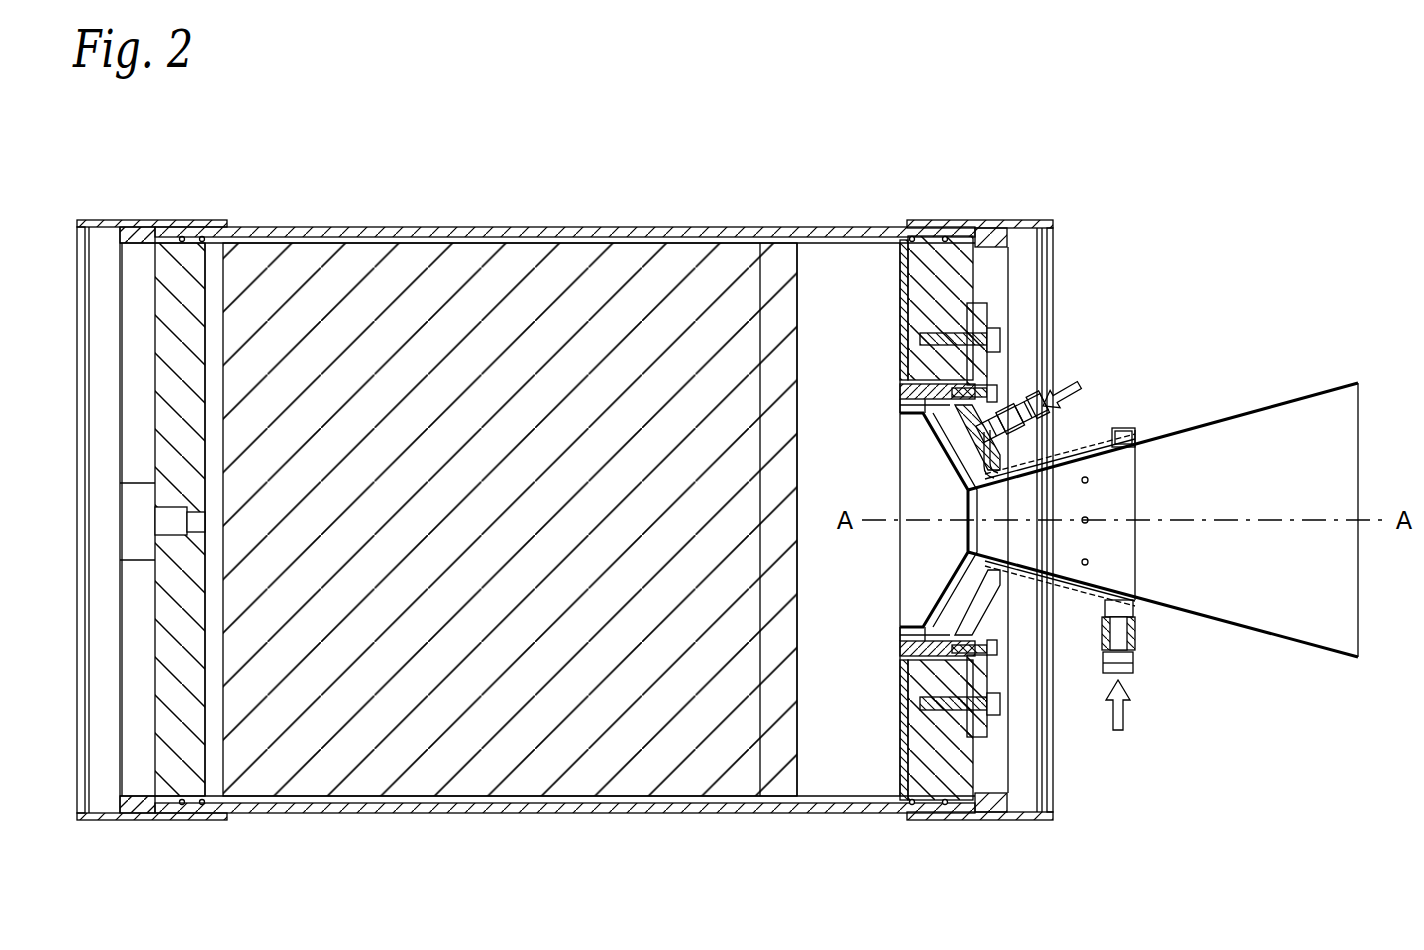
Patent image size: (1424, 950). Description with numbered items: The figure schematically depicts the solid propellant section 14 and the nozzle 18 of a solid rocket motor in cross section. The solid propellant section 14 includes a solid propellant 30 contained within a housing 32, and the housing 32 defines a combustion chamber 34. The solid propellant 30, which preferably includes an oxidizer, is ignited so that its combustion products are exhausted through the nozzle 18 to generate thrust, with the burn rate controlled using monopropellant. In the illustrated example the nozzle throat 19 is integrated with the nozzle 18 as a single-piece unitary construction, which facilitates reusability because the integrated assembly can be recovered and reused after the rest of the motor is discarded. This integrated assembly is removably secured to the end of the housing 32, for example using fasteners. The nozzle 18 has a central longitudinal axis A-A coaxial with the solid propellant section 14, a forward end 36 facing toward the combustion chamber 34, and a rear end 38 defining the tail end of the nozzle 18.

The solid propellant section 14 is at (446, 218).
The solid propellant 30 is at (360, 258).
The housing 32 is at (401, 813).
The combustion chamber 34 is at (848, 780).
The forward end 36 is at (915, 660).
The nozzle throat 19 is at (970, 537).
The nozzle 18 is at (1262, 645).
The rear end 38 is at (1352, 660).